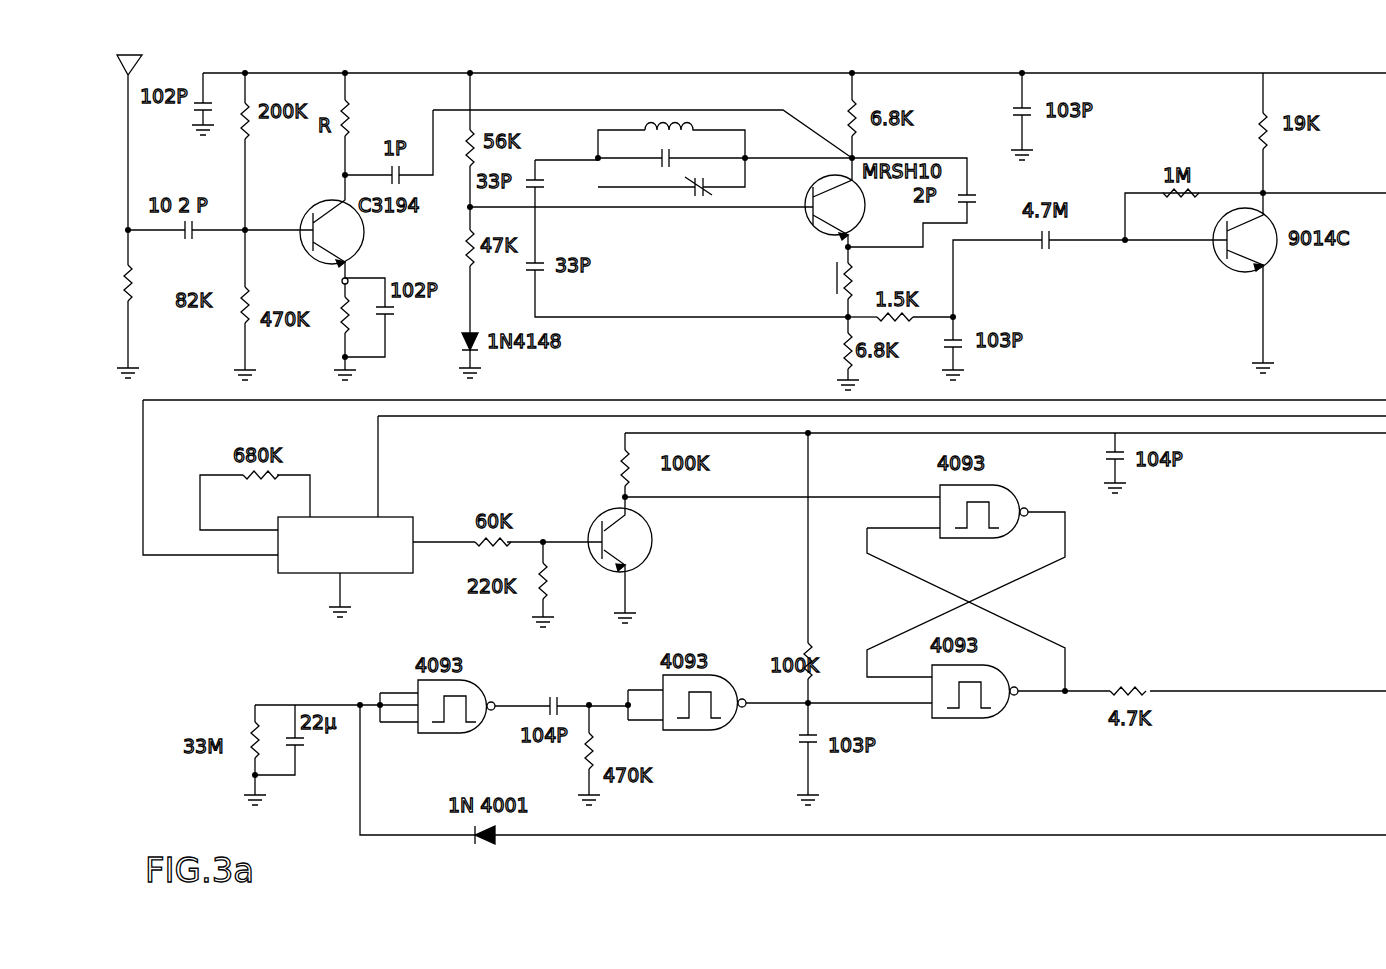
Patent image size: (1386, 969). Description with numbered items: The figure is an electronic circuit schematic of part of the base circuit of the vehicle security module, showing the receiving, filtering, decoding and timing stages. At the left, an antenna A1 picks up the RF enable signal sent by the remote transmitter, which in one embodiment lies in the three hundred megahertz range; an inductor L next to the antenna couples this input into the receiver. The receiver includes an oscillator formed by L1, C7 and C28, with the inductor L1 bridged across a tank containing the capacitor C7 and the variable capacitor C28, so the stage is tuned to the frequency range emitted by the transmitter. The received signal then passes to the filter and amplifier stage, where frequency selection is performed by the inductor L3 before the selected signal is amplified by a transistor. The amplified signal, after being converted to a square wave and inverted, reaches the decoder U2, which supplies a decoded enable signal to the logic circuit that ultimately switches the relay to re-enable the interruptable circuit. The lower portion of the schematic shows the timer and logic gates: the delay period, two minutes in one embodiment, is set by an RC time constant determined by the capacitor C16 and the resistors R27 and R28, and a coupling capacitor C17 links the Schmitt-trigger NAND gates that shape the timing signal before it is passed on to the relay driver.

The antenna A1 is at (106, 142).
The antenna coil L is at (114, 302).
The oscillator inductor L1 is at (642, 121).
The oscillator capacitor C7 is at (682, 150).
The oscillator capacitor C28 is at (655, 204).
The frequency selection inductor L3 is at (823, 282).
The decoder U2 is at (345, 545).
The timer resistor R27 is at (227, 755).
The timer capacitor C16 is at (298, 740).
The capacitor 104P C17 is at (561, 692).
The timer resistor R28 is at (609, 755).